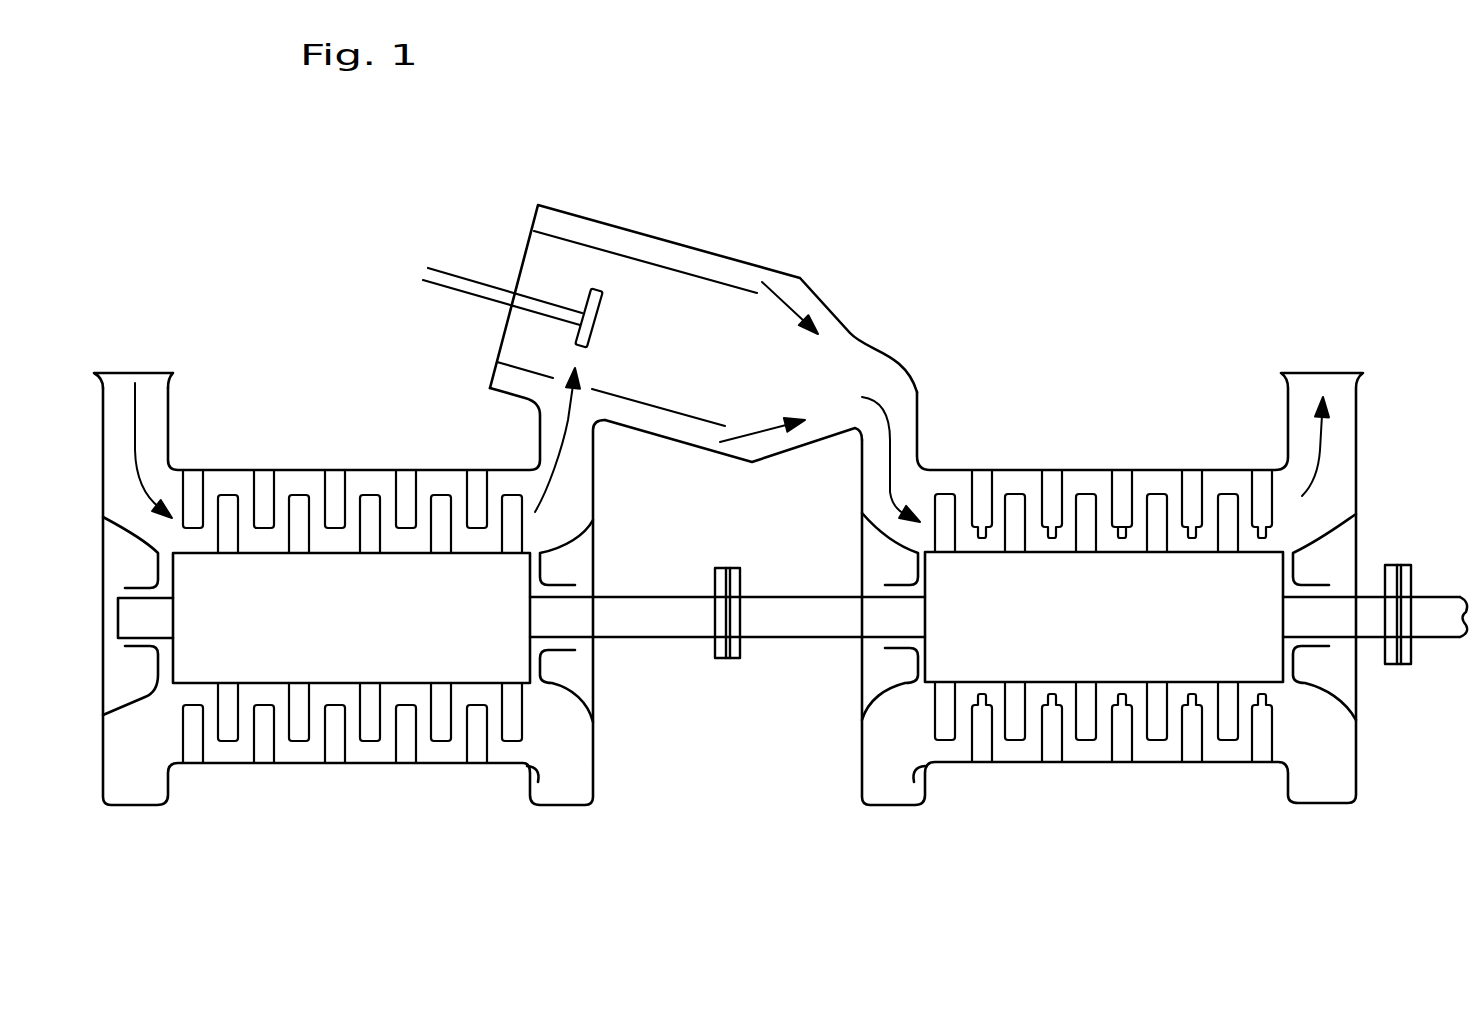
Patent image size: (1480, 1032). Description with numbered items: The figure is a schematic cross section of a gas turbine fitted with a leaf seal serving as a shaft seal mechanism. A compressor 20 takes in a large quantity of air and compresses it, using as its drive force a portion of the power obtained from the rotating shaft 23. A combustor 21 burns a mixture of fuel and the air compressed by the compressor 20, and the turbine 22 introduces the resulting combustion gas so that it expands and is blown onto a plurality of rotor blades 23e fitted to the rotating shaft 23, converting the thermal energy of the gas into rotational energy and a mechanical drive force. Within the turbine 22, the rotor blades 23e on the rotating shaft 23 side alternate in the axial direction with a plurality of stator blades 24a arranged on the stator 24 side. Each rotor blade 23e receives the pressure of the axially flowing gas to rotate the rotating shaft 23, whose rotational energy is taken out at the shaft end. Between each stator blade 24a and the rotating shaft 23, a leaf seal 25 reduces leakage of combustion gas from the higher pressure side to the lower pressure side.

The compressor 20 is at (592, 832).
The combustor 21 is at (922, 175).
The turbine 22 is at (1112, 644).
The rotating shaft 23 is at (792, 633).
The rotor blades 23e is at (1155, 497).
The stator 24 is at (1022, 765).
The stator blades 24a is at (1118, 488).
The leaf seal 25 is at (1122, 540).